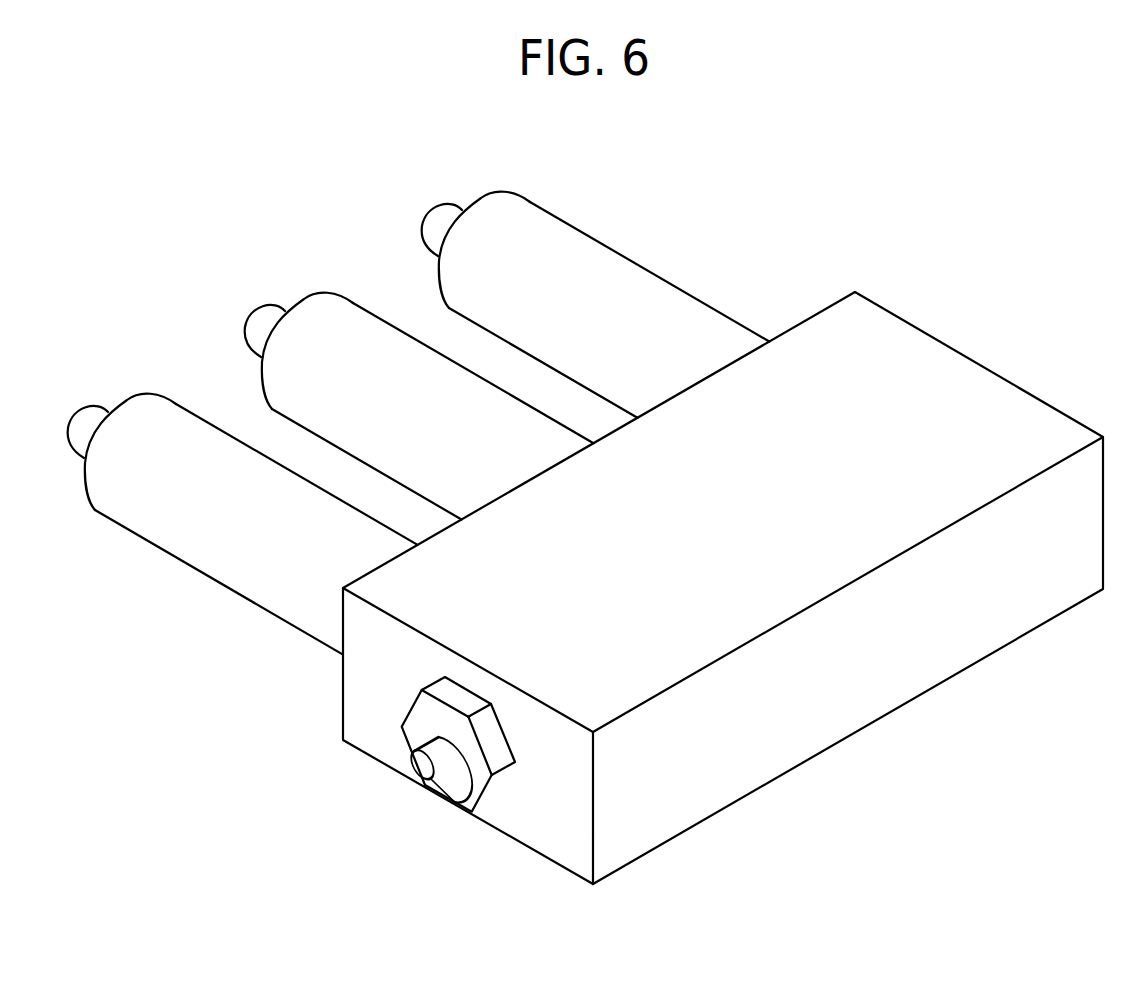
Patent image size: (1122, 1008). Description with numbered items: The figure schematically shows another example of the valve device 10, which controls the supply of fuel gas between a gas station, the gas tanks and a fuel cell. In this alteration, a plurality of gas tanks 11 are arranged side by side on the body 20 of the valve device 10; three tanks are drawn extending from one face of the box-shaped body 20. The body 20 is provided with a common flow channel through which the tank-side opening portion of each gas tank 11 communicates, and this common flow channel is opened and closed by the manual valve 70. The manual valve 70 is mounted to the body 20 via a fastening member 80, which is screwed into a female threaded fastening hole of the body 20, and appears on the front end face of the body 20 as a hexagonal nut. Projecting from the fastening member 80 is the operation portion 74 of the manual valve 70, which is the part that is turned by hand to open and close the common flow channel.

The valve device 10 is at (905, 285).
The gas tank 11 is at (190, 422).
The body 20 is at (875, 701).
The manual valve 70 is at (427, 797).
The operation portion 74 is at (420, 762).
The fastening member 80 is at (490, 785).